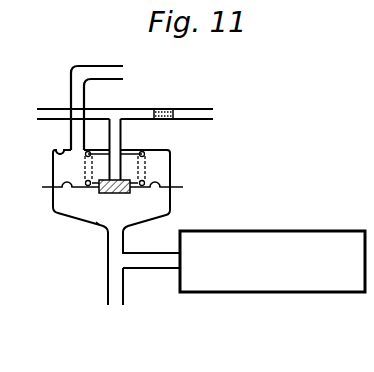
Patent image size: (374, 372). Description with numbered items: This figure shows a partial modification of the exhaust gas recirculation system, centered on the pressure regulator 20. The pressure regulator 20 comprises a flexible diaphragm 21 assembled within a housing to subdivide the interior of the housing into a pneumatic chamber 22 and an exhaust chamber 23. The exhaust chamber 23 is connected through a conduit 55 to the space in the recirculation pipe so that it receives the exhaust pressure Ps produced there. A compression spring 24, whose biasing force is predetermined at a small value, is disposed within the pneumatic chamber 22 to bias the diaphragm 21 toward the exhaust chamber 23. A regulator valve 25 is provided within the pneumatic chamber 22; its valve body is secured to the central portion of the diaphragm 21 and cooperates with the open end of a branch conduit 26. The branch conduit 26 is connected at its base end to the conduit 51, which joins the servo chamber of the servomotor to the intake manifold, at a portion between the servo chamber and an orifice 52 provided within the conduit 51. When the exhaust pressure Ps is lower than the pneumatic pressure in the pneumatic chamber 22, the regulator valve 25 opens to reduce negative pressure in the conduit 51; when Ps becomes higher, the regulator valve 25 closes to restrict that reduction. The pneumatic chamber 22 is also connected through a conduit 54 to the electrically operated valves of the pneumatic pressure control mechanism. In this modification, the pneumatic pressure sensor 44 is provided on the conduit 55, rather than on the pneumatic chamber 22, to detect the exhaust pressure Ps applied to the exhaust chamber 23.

The pressure regulator 20 is at (97, 249).
The flexible diaphragm 21 is at (167, 174).
The pneumatic chamber 22 is at (58, 156).
The exhaust chamber 23 is at (98, 218).
The compression spring 24 is at (144, 152).
The regulator valve 25 is at (131, 210).
The branch conduit 26 is at (112, 125).
The pneumatic pressure sensor 44 is at (232, 293).
The conduit 51 is at (195, 121).
The orifice 52 is at (166, 109).
The conduit 54 is at (104, 67).
The conduit 55 is at (110, 291).